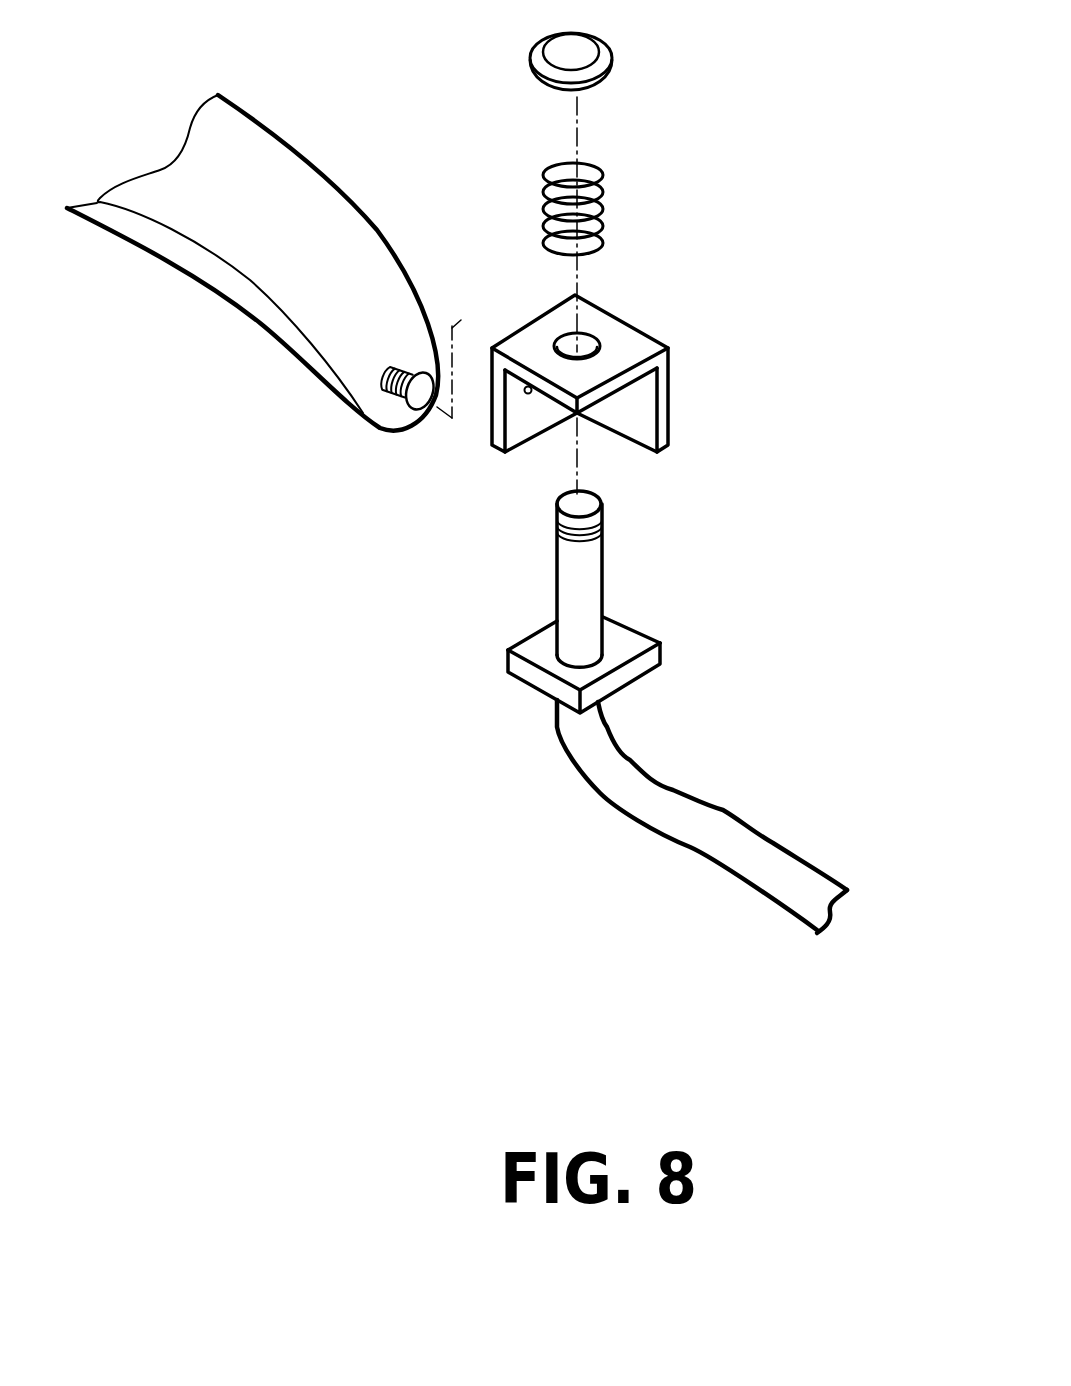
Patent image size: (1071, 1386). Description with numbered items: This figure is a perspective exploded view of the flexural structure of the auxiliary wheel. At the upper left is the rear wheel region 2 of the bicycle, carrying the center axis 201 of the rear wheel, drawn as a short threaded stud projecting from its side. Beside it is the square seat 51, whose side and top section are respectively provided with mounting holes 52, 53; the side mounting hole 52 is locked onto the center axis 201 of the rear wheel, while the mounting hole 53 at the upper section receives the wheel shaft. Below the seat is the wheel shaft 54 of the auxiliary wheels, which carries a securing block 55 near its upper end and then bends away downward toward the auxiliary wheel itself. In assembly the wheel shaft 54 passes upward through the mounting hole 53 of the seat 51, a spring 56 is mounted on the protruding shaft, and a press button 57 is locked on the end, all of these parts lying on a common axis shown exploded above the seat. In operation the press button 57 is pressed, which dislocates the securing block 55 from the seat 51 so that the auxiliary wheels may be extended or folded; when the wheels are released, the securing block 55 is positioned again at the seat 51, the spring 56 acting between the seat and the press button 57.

The frame member 2 is at (325, 170).
The center axis 201 is at (385, 396).
The square seat 51 is at (665, 382).
The mounting hole 52 is at (533, 394).
The mounting hole 53 is at (590, 338).
The wheel shaft 54 is at (767, 837).
The securing block 55 is at (522, 648).
The spring 56 is at (603, 202).
The press button 57 is at (611, 73).